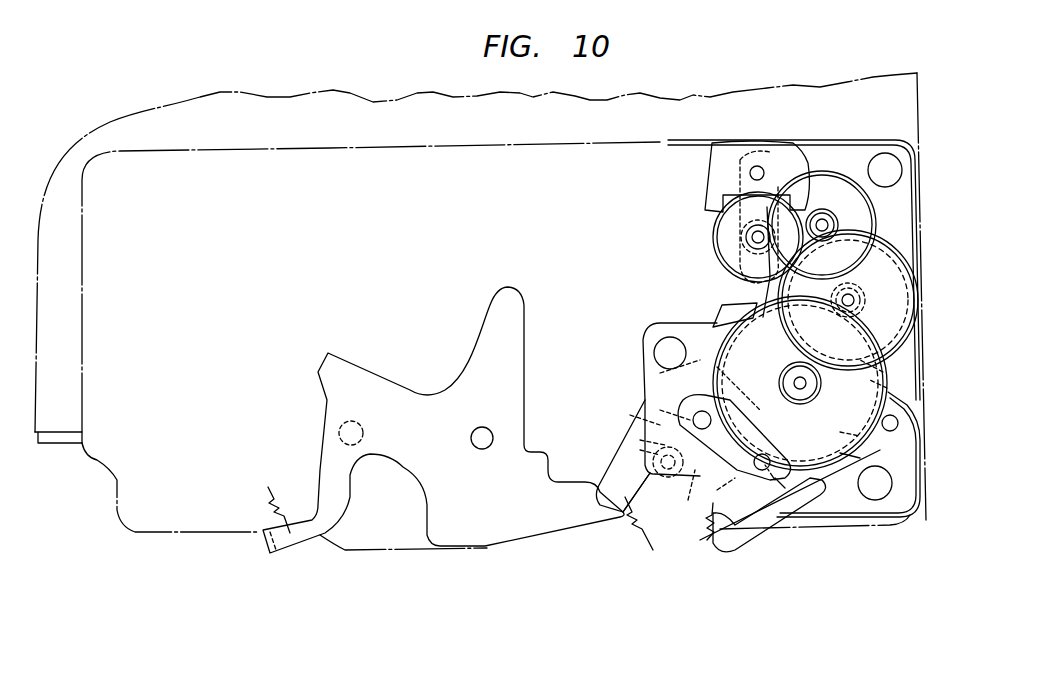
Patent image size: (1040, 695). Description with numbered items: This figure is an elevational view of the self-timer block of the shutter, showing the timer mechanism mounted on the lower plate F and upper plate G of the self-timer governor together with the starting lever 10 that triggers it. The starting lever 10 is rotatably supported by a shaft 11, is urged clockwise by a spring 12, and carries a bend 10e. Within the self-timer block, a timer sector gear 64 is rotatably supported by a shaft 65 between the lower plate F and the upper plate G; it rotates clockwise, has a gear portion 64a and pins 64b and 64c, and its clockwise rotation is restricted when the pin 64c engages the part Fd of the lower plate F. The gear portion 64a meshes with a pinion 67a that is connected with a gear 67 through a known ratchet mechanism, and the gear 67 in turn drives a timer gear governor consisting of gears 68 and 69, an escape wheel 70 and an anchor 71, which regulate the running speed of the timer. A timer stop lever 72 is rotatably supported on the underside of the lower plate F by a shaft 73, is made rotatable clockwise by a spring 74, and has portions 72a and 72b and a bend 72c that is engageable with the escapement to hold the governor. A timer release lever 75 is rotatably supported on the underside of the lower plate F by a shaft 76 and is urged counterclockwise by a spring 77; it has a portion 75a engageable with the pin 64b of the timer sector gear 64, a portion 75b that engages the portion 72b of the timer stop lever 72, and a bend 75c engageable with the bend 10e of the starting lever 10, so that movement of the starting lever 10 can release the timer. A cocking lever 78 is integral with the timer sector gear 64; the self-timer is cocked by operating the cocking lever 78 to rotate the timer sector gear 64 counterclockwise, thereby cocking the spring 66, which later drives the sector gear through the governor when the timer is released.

The starting lever 10 is at (502, 495).
The bend 10e is at (688, 500).
The shaft 11 is at (475, 450).
The spring 12 is at (275, 502).
The timer sector gear 64 is at (840, 463).
The gear portion 64a is at (840, 453).
The pin 64b is at (668, 477).
The pin 64c is at (640, 440).
The shaft 65 is at (640, 392).
The spring 66 is at (747, 483).
The gear 67 is at (887, 388).
The pinion 67a is at (883, 372).
The gear 68 is at (880, 255).
The gear 69 is at (828, 188).
The escape wheel 70 is at (727, 230).
The anchor 71 is at (773, 157).
The timer stop lever 72 is at (903, 402).
The portion 72a is at (717, 490).
The portion 72b is at (660, 373).
The bend 72c is at (717, 303).
The shaft 73 is at (895, 420).
The spring 74 is at (717, 517).
The timer release lever 75 is at (700, 363).
The portion 75a is at (640, 450).
The portion 75b is at (840, 432).
The bend 75c is at (650, 472).
The shaft 76 is at (717, 367).
The spring 77 is at (631, 498).
The cocking lever 78 is at (660, 410).
The part of the lower plate Fd is at (630, 415).
The upper plate for the self-timer governor G is at (775, 480).
The lower plate for the self-timer governor F is at (785, 488).